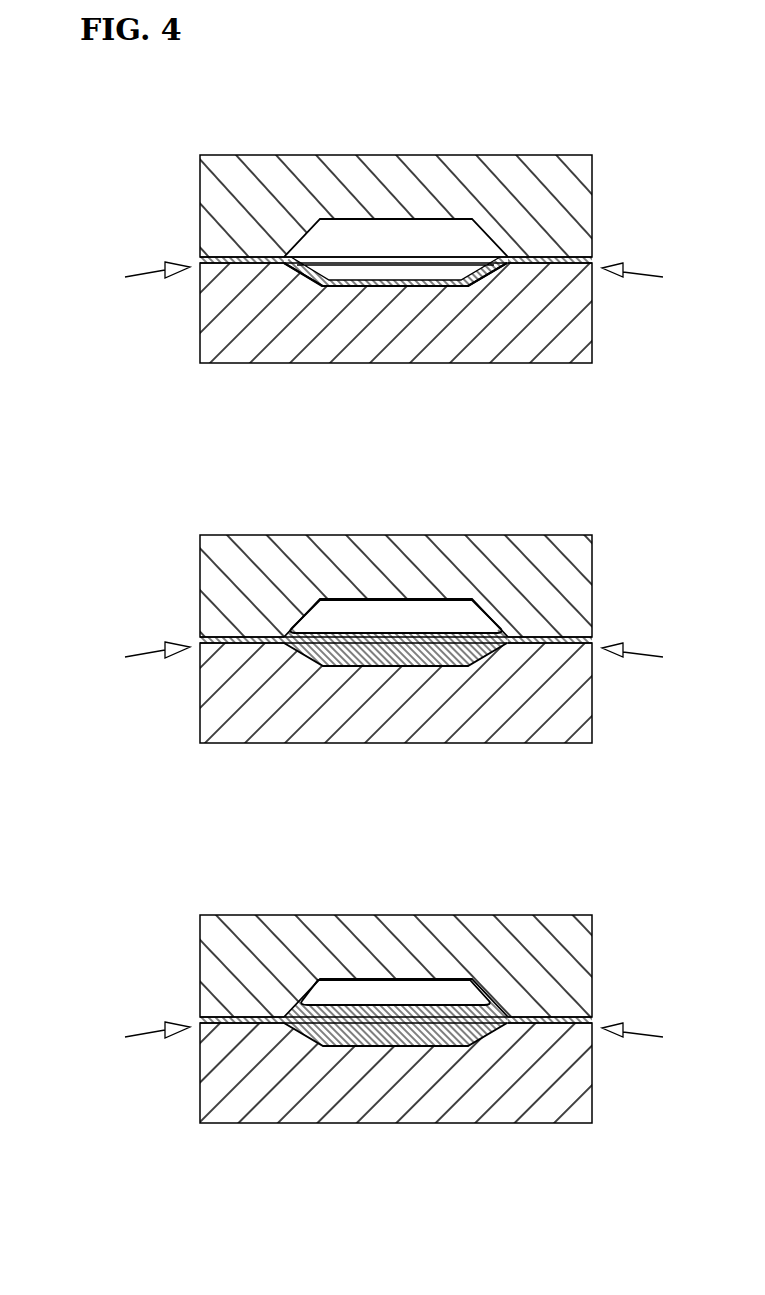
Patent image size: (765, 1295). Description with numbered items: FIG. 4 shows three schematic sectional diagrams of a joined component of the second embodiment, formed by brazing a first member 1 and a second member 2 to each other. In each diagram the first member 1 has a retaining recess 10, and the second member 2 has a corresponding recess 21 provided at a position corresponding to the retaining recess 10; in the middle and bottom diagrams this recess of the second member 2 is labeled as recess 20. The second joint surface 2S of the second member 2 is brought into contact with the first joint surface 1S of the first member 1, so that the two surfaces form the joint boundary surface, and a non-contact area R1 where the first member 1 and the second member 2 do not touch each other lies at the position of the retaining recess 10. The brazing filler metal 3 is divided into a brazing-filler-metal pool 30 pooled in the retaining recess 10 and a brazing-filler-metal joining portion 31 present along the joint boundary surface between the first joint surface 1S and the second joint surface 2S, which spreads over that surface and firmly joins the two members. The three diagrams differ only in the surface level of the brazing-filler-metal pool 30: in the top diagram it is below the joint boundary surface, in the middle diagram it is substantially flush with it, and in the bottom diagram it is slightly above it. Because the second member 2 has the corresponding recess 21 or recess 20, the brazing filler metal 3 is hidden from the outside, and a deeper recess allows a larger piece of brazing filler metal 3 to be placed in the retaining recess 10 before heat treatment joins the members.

The first member 1 is at (442, 693).
The second member 2 is at (439, 586).
The brazing filler metal 3 is at (342, 573).
The brazing-filler-metal pool 30 is at (343, 573).
The brazing-filler-metal joining portion 31 is at (342, 607).
The retaining recess 10 is at (415, 720).
The cavity of second die 20 is at (421, 744).
The corresponding recess 21 is at (423, 174).
The first joint surface 1S is at (439, 622).
The second joint surface 2S is at (429, 668).
The non-contact area R1 is at (396, 554).